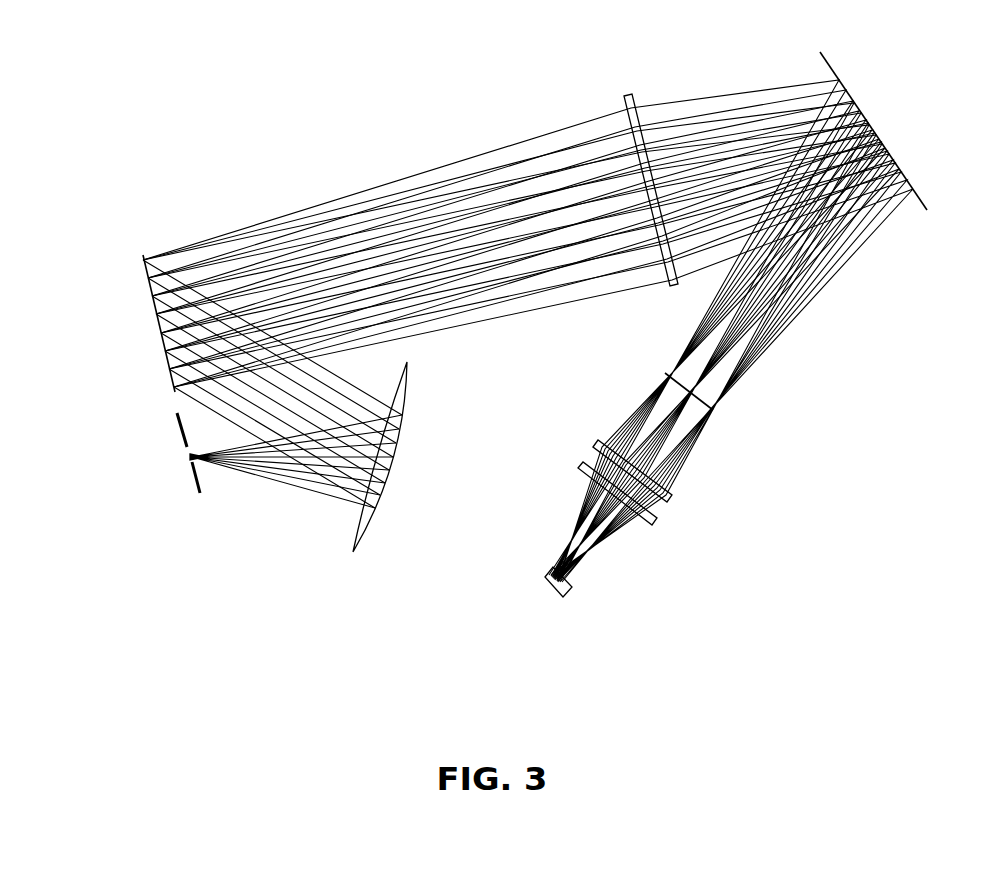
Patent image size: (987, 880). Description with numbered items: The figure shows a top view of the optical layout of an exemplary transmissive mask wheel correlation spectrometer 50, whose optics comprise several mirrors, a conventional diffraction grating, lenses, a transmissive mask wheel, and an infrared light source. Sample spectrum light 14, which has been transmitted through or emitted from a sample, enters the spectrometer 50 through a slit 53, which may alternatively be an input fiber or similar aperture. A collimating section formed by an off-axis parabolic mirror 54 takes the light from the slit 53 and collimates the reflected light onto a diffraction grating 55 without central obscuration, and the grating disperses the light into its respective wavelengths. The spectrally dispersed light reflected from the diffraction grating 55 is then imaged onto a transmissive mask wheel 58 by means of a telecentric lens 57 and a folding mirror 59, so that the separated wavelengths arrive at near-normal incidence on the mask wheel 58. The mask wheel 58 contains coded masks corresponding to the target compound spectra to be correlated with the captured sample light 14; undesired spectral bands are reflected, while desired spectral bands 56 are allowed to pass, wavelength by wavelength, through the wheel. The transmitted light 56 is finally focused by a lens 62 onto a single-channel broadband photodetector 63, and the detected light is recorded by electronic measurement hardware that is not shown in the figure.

The transmissive mask wheel correlation spectrometer 50 is at (190, 78).
The sample spectrum light 14 is at (270, 473).
The slit 53 is at (175, 423).
The off-axis parabolic mirror 54 is at (397, 437).
The diffraction grating 55 is at (157, 310).
The desired spectral bands 56 is at (683, 465).
The telecentric lens 57 is at (627, 93).
The transmissive mask wheel 58 is at (712, 407).
The folding mirror 59 is at (860, 112).
The lens 62 is at (670, 500).
The photodetector 63 is at (567, 585).